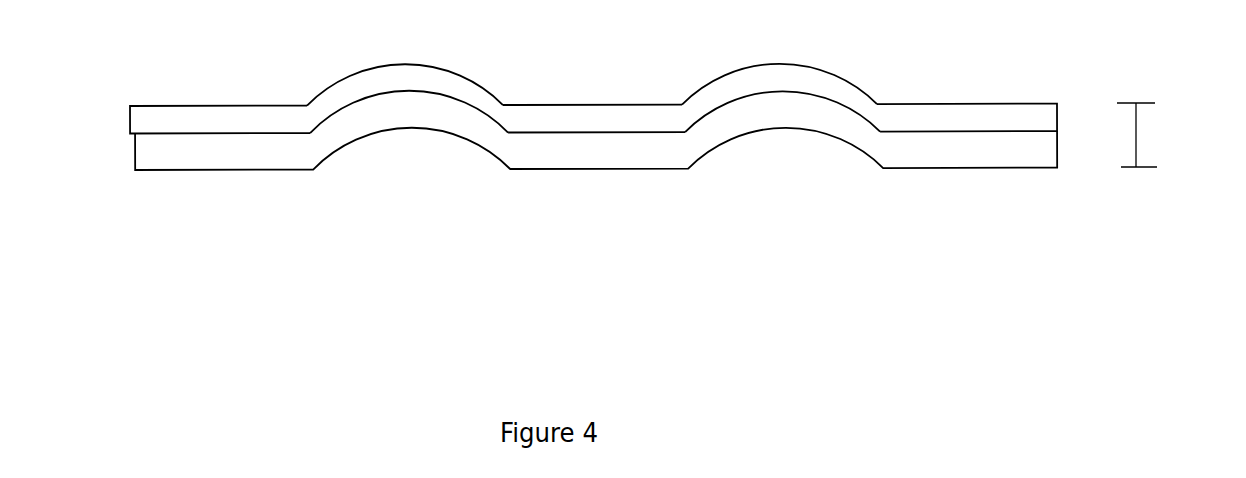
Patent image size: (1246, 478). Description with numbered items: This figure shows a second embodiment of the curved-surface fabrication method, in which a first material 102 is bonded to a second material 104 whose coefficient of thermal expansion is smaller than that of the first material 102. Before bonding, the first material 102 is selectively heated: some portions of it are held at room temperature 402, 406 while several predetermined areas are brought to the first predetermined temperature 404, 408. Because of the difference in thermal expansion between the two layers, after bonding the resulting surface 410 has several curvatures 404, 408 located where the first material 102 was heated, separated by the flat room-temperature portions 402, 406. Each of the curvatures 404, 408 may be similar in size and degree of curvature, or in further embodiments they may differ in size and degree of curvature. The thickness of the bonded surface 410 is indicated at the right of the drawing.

The first material 102 is at (555, 113).
The second material 104 is at (1059, 153).
The room-temperature portion of first material 402 is at (566, 67).
The predetermined area / curvature 404 is at (405, 60).
The room-temperature portion of first material 406 is at (642, 102).
The predetermined area / curvature 408 is at (785, 57).
The surface 410 is at (1138, 123).